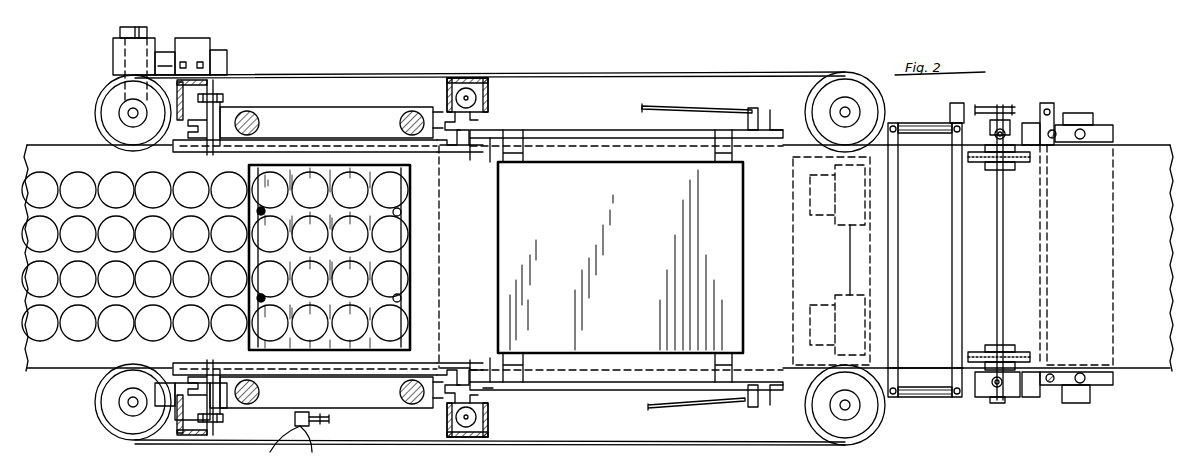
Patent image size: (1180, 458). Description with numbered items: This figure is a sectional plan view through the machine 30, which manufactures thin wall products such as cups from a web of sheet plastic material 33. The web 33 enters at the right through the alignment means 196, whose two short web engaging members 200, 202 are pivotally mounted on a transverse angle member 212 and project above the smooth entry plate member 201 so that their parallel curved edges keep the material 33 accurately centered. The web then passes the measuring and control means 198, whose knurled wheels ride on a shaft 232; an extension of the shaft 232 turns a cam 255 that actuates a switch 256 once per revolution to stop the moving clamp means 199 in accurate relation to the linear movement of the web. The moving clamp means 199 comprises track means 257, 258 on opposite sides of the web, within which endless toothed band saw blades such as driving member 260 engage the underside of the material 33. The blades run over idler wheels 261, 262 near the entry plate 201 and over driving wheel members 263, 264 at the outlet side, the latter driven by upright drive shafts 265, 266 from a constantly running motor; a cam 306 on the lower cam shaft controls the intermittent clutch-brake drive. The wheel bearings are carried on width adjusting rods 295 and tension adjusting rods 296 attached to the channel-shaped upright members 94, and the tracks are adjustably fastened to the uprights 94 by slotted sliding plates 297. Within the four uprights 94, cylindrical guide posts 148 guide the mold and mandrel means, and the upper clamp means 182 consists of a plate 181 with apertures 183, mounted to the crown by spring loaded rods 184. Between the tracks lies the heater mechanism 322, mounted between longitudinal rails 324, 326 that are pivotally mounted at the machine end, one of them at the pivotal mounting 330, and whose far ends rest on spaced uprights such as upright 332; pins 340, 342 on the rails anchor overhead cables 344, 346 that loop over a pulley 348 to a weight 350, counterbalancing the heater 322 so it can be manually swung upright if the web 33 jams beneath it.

The machine 30 is at (872, 46).
The sheet stock of plastic material 33 is at (471, 224).
The upright members 94 is at (490, 94).
The guide posts 148 is at (392, 108).
The plate 181 is at (432, 262).
The upper clamp means 182 is at (480, 186).
The apertures 183 is at (432, 334).
The rods 184 is at (400, 214).
The alignment means 196 is at (1096, 412).
The measuring and control means 198 is at (999, 410).
The moving clamp means 199 is at (896, 409).
The web engaging member 200 is at (1114, 386).
The entry plate member 201 is at (1113, 221).
The web engaging member 202 is at (1103, 126).
The angle member 212 is at (1088, 110).
The shaft 232 is at (1005, 246).
The cam 255 is at (1012, 108).
The switch 256 is at (958, 105).
The track means 257 is at (604, 158).
The track means 258 is at (620, 362).
The driving member 260 is at (647, 72).
The idler wheel 261 is at (815, 420).
The idler wheel 262 is at (830, 98).
The driving wheel member 263 is at (115, 406).
The driving wheel member 264 is at (115, 119).
The drive shaft 265 is at (130, 400).
The drive shaft 266 is at (130, 110).
The width adjusting rods 295 is at (148, 30).
The tension adjusting rods 296 is at (225, 50).
The sliding plates 297 is at (232, 100).
The cam 306 is at (322, 426).
The heater mechanism 322 is at (780, 250).
The rail 324 is at (543, 394).
The rail 326 is at (533, 130).
The pivotal mounting 330 is at (485, 124).
The upright 332 is at (762, 100).
The second pin 340 is at (748, 410).
The second pin 342 is at (716, 108).
The overhead cable 344 is at (674, 412).
The overhead cable 346 is at (648, 104).
The pulley 348 is at (453, 432).
The weight 350 is at (450, 78).